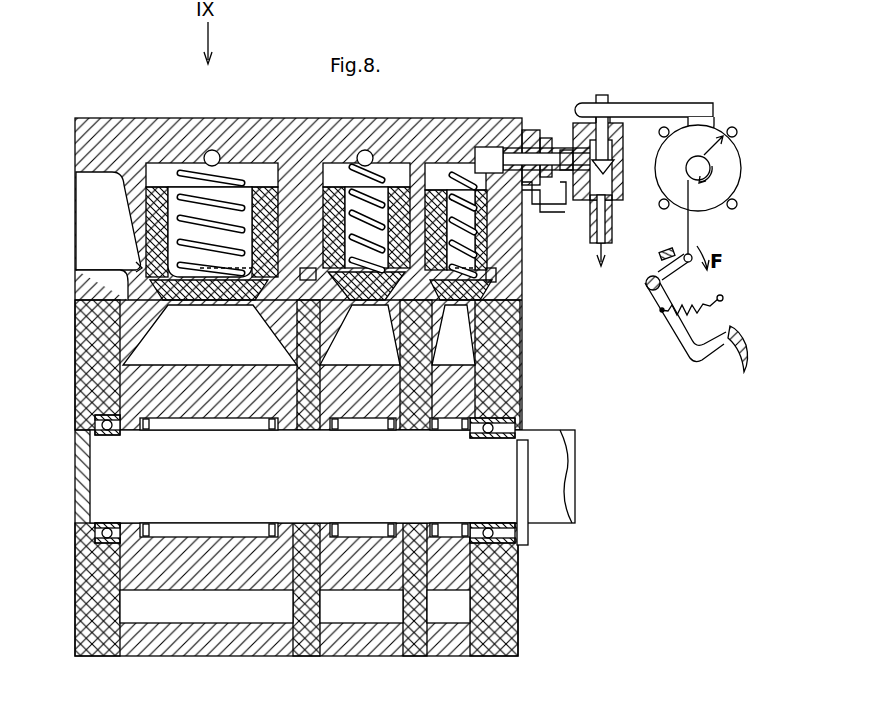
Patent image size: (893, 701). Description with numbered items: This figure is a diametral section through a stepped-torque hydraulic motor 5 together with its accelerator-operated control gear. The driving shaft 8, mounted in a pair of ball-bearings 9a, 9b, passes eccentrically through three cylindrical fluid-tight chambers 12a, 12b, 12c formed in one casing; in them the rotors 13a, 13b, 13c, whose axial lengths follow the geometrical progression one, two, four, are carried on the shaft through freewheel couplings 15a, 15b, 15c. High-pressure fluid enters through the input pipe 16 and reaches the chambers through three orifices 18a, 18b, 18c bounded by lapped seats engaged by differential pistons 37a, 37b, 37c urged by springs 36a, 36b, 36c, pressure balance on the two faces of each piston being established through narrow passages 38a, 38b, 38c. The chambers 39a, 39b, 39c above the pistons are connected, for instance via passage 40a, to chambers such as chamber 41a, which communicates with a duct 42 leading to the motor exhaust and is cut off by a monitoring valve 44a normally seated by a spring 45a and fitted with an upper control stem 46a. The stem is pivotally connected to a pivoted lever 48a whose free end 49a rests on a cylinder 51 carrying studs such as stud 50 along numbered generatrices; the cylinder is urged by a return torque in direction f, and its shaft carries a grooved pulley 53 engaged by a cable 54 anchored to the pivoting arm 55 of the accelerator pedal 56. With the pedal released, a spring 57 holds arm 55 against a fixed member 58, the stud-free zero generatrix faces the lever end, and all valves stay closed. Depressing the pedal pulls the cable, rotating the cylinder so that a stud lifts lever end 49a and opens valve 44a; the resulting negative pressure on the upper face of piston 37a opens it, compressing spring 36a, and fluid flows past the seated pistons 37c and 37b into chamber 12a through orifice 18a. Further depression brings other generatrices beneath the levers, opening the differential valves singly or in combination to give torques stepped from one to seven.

The hydraulic motor 5 is at (85, 116).
The driving shaft 8 is at (100, 483).
The ball-bearing 9a is at (512, 430).
The ball-bearing 9b is at (95, 424).
The fluid-tight chamber 12a is at (448, 606).
The fluid-tight chamber 12b is at (361, 606).
The fluid-tight chamber 12c is at (206, 606).
The rotor 13a is at (448, 548).
The rotor 13b is at (358, 548).
The rotor 13c is at (190, 548).
The freewheel coupling 15a is at (450, 430).
The freewheel coupling 15b is at (366, 430).
The freewheel coupling 15c is at (210, 430).
The input pipe 16 is at (80, 220).
The orifice 18a is at (455, 310).
The orifice 18b is at (372, 310).
The orifice 18c is at (190, 308).
The spring 36a is at (447, 175).
The spring 36b is at (356, 170).
The spring 36c is at (180, 175).
The differential piston 37a is at (488, 293).
The differential piston 37b is at (300, 335).
The differential piston 37c is at (226, 300).
The narrow passage 38a is at (498, 280).
The narrow passage 38b is at (332, 277).
The narrow passage 38c is at (136, 266).
The chamber 39a is at (480, 170).
The chamber 39b is at (328, 170).
The chamber 39c is at (258, 172).
The passage 40a is at (562, 145).
The chamber 41a is at (620, 135).
The duct 42 is at (590, 218).
The monitoring valve 44a is at (573, 150).
The spring 45a is at (588, 106).
The control stem 46a is at (610, 125).
The pivoted lever 48a is at (672, 104).
The free end 49a is at (708, 116).
The stud 50 is at (738, 140).
The cylinder 51 is at (735, 185).
The grooved pulley 53 is at (734, 130).
The cable 54 is at (686, 222).
The pivoting arm 55 is at (648, 283).
The accelerator pedal 56 is at (745, 345).
The spring 57 is at (722, 298).
The fixed member 58 is at (660, 255).